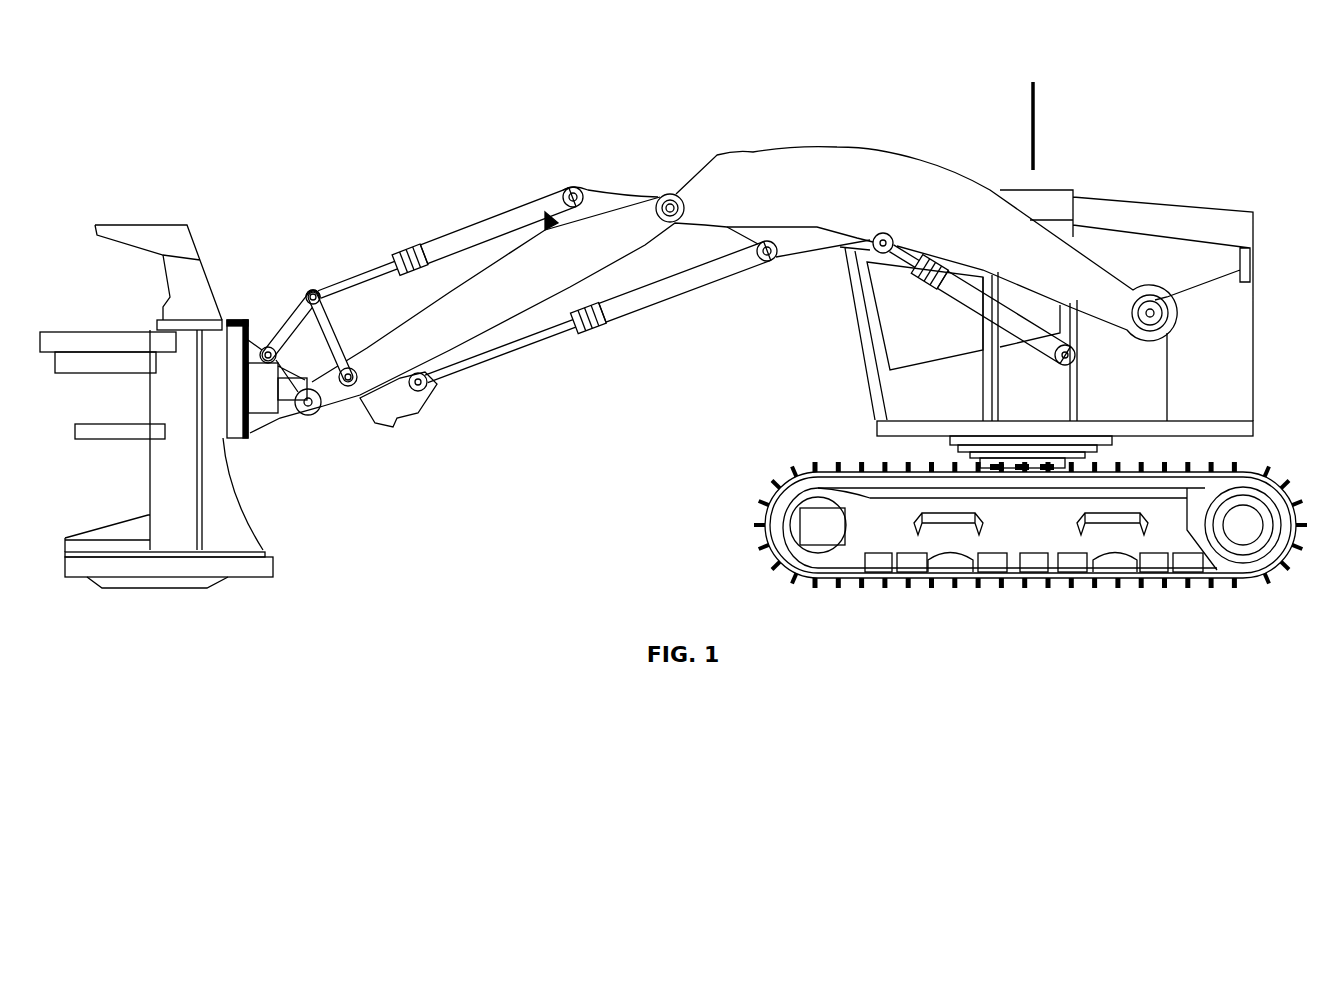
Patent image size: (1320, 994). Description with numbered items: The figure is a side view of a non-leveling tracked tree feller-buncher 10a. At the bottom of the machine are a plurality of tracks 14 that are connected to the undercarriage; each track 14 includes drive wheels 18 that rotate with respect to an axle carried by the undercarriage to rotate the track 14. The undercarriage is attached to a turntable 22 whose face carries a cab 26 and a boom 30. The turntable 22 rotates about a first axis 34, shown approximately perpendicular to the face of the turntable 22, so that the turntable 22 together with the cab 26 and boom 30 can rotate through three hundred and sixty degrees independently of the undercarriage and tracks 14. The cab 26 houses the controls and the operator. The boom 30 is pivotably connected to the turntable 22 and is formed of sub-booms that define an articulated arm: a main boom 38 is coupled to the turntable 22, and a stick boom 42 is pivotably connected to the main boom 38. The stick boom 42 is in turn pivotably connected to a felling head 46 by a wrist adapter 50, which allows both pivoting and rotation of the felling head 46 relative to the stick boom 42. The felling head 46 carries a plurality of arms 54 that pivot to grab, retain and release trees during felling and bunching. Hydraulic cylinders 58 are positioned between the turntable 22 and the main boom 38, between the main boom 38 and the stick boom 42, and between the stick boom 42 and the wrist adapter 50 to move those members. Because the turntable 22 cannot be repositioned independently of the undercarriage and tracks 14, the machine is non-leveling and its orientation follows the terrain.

The non-leveling tree feller-buncher 10a is at (312, 147).
The tracks 14 is at (1257, 468).
The drive wheels 18 is at (783, 478).
The turntable 22 is at (872, 424).
The cab 26 is at (848, 293).
The boom 30 is at (682, 150).
The first axis 34 is at (1036, 122).
The main boom 38 is at (835, 153).
The stick boom 42 is at (372, 370).
The felling head 46 is at (193, 243).
The wrist adapter 50 is at (263, 427).
The arms 54 is at (57, 378).
The hydraulic cylinders 58 is at (480, 220).